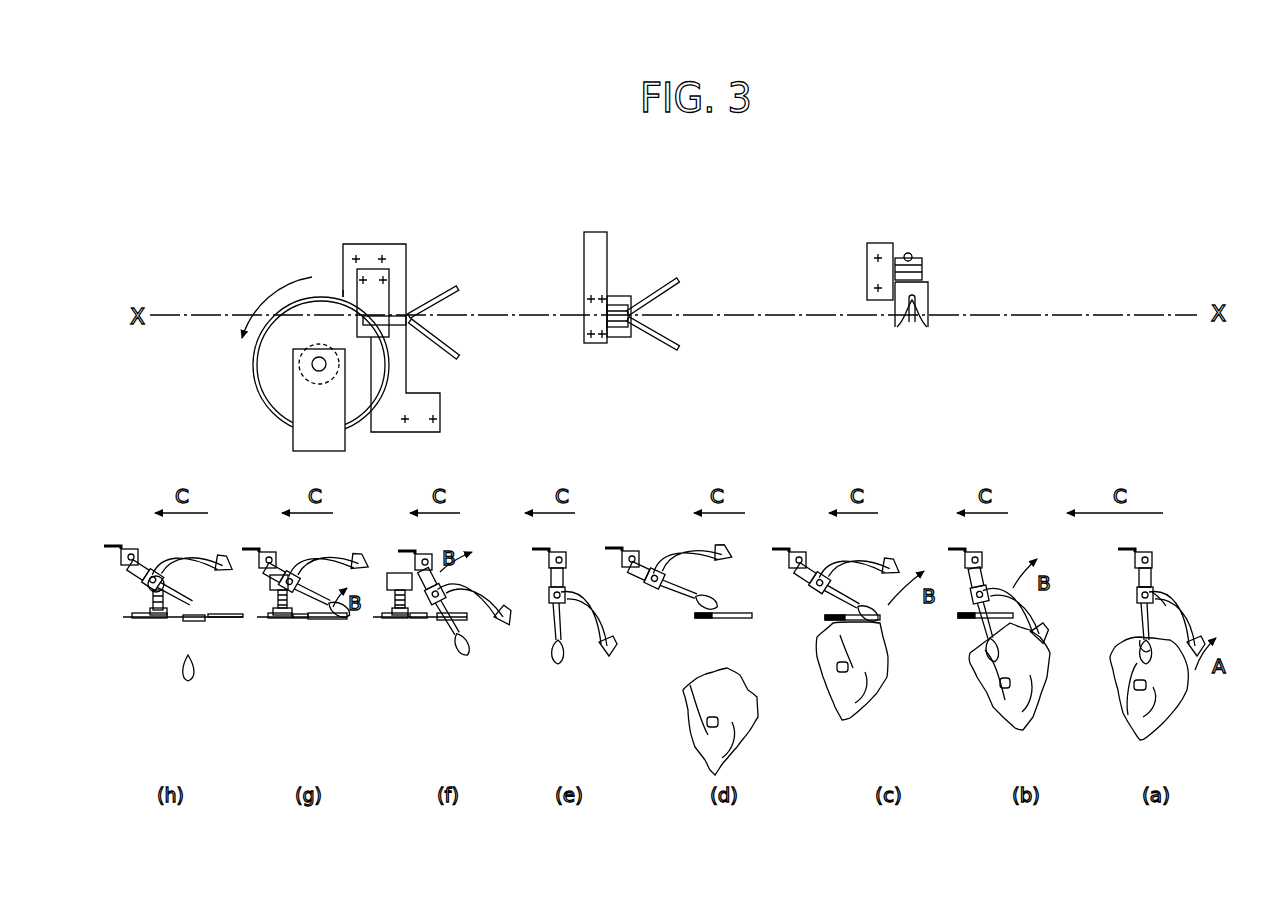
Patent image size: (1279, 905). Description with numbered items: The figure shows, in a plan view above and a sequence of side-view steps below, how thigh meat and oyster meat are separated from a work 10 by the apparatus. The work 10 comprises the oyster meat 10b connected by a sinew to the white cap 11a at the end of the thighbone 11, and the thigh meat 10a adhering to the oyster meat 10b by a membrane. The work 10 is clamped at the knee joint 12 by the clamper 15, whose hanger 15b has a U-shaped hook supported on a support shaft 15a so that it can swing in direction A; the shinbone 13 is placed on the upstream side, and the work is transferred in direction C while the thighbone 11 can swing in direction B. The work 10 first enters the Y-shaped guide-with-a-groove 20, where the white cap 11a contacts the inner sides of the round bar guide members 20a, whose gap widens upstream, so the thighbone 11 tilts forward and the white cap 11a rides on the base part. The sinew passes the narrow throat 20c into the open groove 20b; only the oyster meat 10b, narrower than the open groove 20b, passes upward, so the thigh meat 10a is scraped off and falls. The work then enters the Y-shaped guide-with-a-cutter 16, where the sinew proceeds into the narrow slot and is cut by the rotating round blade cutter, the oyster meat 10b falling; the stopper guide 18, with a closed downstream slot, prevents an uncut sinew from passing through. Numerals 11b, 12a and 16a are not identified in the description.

The work 10 is at (1230, 669).
The thigh meat 10a is at (1165, 723).
The oyster meat 10b is at (1160, 650).
The thighbone 11 is at (1175, 618).
The white cap 11a is at (1143, 638).
The pivot of gripping arm 11b is at (1137, 597).
The knee joint 12 is at (1153, 588).
The guide bar 12a is at (990, 622).
The shinbone 13 is at (1166, 604).
The clamper 15 is at (882, 243).
The support shaft 15a is at (905, 258).
The hanger 15b is at (918, 305).
The Y-shaped guide-with-a-cutter 16 is at (387, 243).
The transfer device arms 16a is at (430, 293).
The stopper guide 18 is at (357, 293).
The Y-shaped guide-with-a-groove 20 is at (597, 232).
The round bar guide members 20a is at (680, 282).
The open groove 20b is at (617, 305).
The narrow throat 20c is at (632, 333).